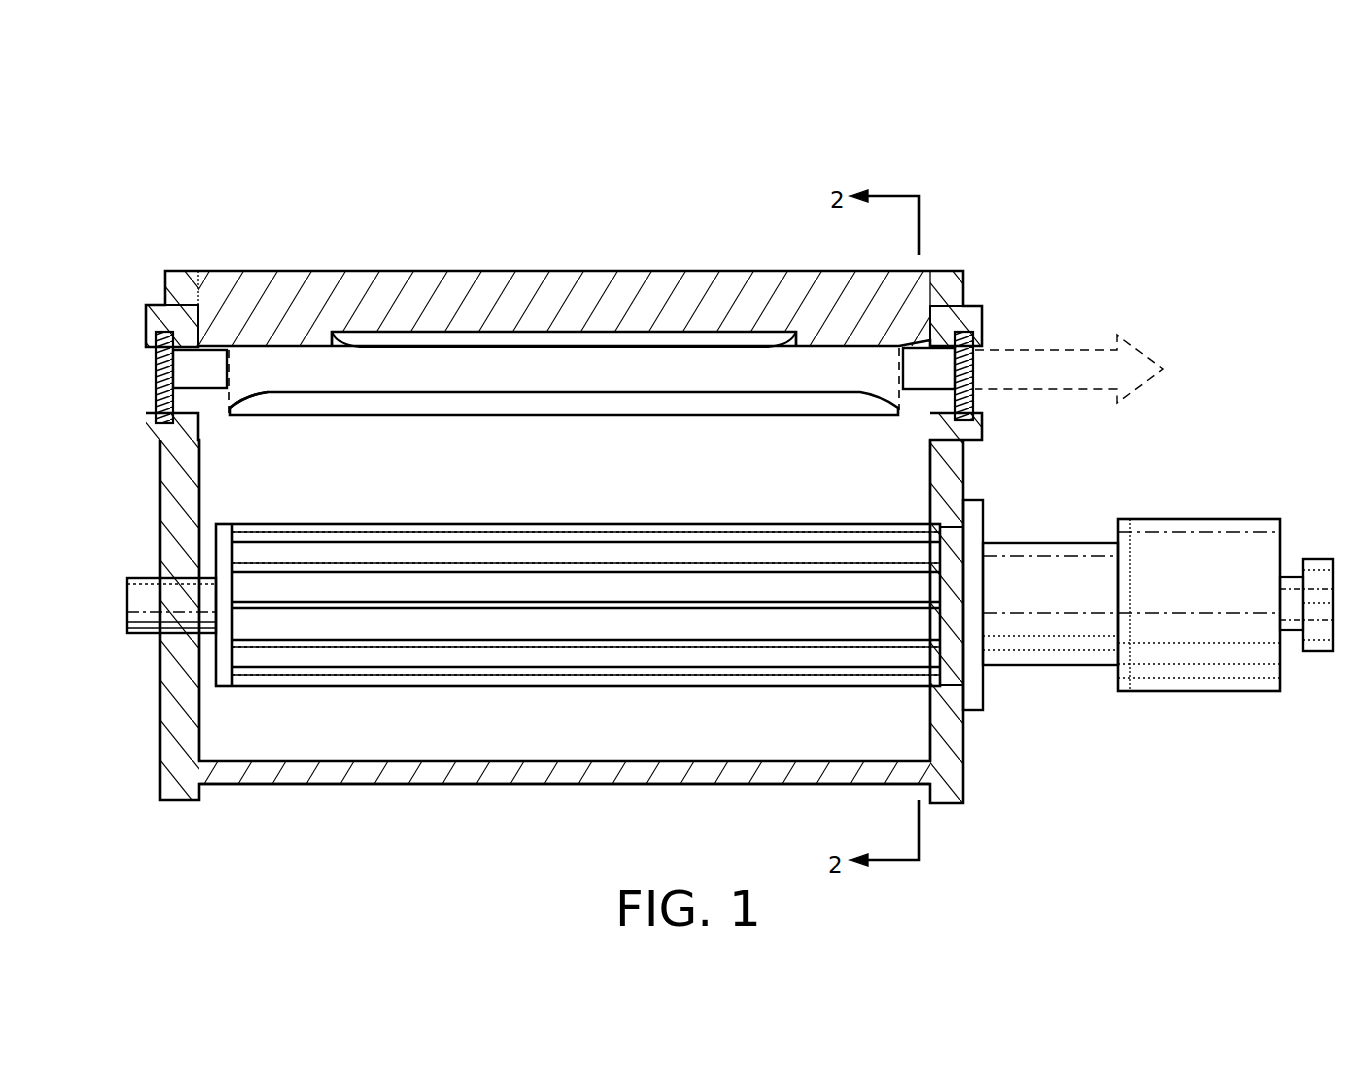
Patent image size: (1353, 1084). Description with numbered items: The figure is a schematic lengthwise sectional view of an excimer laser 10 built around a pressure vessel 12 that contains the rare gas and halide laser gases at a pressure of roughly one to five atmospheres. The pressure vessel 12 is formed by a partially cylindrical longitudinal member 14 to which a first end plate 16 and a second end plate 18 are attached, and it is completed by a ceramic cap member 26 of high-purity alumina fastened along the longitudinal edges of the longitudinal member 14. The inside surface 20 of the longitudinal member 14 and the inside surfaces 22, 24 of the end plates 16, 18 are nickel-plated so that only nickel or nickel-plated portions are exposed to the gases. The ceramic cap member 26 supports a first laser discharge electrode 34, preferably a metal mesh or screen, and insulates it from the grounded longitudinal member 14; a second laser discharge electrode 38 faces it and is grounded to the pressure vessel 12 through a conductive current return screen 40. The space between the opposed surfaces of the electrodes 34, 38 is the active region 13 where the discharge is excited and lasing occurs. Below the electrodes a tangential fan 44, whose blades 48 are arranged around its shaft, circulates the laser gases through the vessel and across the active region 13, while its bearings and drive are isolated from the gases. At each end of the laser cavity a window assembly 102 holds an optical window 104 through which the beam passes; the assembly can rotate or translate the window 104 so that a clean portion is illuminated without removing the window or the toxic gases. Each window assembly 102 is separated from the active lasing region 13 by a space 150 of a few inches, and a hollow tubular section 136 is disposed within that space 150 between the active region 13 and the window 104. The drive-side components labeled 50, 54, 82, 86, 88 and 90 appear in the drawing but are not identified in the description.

The excimer laser 10 is at (188, 192).
The pressure vessel 12 is at (288, 783).
The active region 13 is at (396, 388).
The partially cylindrical longitudinal member 14 is at (433, 785).
The first end plate 16 is at (160, 765).
The second end plate 18 is at (965, 750).
The inside surface of longitudinal member 20 is at (403, 761).
The inside surface of first end plate 22 is at (199, 707).
The inside surface of second end plate 24 is at (928, 732).
The ceramic cap member 26 is at (865, 270).
The first laser discharge electrode 34 is at (440, 332).
The second laser discharge electrode 38 is at (455, 392).
The current return screen 40 is at (237, 397).
The tangential fan 44 is at (632, 686).
The blades 48 is at (795, 686).
The hub 50 is at (1010, 672).
The drive shaft 54 is at (1050, 544).
The motor coupling 82 is at (1195, 518).
The knob 86 is at (1320, 558).
The shaft end 88 is at (142, 568).
The shaft stub 90 is at (140, 634).
The window assembly 102 is at (146, 320).
The optical window 104 is at (156, 405).
The hollow tubular section 136 is at (215, 340).
The space 150 is at (210, 408).